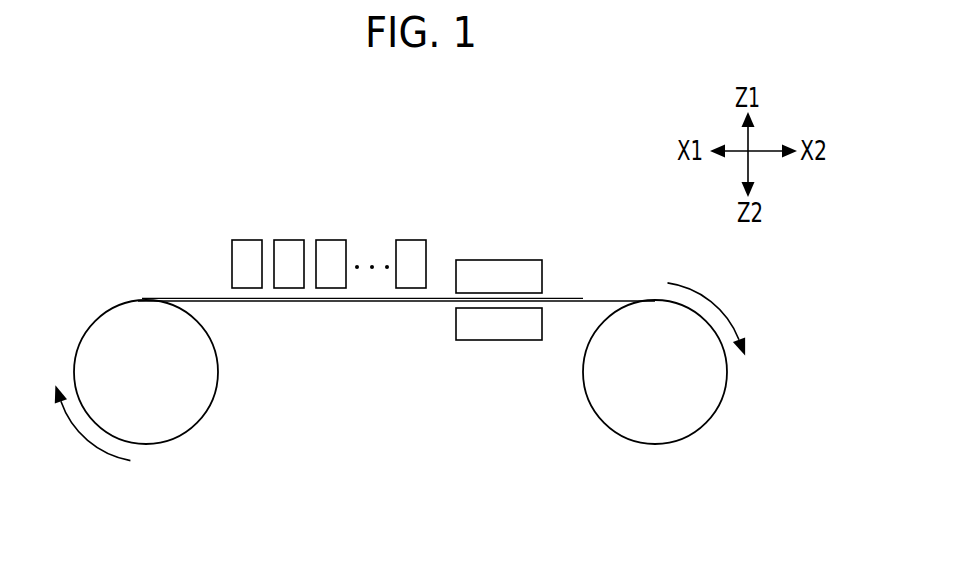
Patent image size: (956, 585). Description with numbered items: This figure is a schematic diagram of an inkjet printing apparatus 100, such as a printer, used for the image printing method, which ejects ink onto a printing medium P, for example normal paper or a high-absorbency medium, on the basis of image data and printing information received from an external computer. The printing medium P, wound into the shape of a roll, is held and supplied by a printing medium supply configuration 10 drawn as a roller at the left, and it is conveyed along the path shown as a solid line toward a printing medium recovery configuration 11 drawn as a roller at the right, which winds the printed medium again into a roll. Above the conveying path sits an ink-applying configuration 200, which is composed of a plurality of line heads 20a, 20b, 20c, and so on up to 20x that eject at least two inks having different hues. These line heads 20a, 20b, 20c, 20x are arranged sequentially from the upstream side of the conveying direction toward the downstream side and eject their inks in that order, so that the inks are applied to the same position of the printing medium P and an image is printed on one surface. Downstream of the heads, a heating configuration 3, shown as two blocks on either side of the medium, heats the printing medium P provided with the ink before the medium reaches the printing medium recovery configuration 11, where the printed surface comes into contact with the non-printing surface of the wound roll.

The inkjet printing apparatus 100 is at (400, 331).
The printing medium supply configuration 10 is at (195, 407).
The printing medium recovery configuration 11 is at (668, 425).
The heating configuration 3 is at (498, 275).
The ink-applying configuration 200 is at (442, 158).
The line head 20a is at (247, 256).
The line head 20b is at (289, 256).
The line head 20c is at (330, 256).
The line head 20x is at (410, 256).
The printing medium P is at (583, 300).